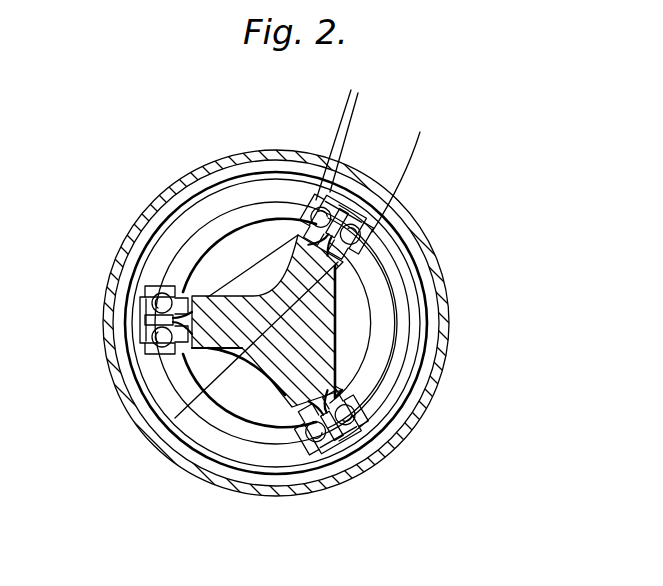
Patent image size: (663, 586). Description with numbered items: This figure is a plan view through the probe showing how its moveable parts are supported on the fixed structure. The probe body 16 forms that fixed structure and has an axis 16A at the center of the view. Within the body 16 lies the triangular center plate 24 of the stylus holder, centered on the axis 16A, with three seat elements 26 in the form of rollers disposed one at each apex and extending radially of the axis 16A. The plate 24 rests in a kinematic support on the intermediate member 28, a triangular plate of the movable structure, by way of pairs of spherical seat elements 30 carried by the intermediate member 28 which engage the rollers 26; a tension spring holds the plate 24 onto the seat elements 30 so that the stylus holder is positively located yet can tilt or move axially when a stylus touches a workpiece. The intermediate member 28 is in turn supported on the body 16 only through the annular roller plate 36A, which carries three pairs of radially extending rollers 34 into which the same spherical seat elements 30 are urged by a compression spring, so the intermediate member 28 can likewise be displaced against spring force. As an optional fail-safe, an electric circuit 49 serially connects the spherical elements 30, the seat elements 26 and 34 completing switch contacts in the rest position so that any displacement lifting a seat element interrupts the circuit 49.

The body 16 is at (440, 312).
The axis 16A is at (238, 370).
The center plate 24 is at (335, 358).
The seat elements 26 is at (188, 311).
The intermediate member 28 is at (342, 268).
The seat elements 30 is at (356, 210).
The seat elements 34 is at (318, 450).
The roller plate 36A is at (407, 278).
The electric circuit 49 is at (420, 135).